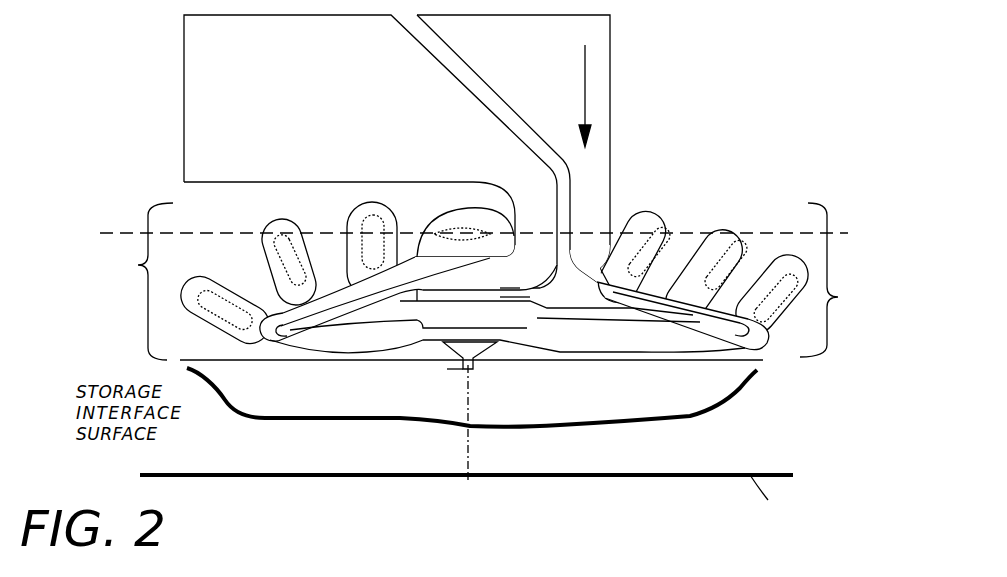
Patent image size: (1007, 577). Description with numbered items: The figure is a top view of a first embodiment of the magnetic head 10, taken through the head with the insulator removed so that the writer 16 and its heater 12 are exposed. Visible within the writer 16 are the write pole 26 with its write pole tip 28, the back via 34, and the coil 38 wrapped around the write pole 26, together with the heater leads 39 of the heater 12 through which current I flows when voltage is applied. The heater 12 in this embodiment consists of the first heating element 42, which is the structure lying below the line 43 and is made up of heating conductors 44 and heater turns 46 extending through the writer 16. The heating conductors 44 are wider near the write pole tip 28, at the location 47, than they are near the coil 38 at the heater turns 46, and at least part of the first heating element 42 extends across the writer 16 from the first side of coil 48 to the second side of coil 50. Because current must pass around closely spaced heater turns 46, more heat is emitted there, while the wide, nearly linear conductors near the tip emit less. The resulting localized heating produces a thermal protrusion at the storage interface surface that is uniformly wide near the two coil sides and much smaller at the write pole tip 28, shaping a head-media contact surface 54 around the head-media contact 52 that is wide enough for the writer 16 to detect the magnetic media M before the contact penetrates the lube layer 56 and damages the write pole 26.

The magnetic head 10 is at (726, 124).
The heater 12 is at (595, 160).
The writer 16 is at (150, 93).
The write pole 26 is at (483, 348).
The write pole tip 28 is at (447, 368).
The back via 34 is at (462, 234).
The coil 38 is at (200, 308).
The heater leads 39 is at (203, 61).
The first heating element 42 is at (270, 295).
The line 43 is at (122, 233).
The heating conductors 44 is at (347, 285).
The heater turns 46 is at (760, 340).
The location 47 is at (517, 313).
The first side of coil 48 is at (134, 281).
The second side of coil 50 is at (845, 280).
The head-media contact 52 is at (472, 427).
The head-media contact surface 54 is at (315, 423).
The lube layer 56 is at (707, 475).